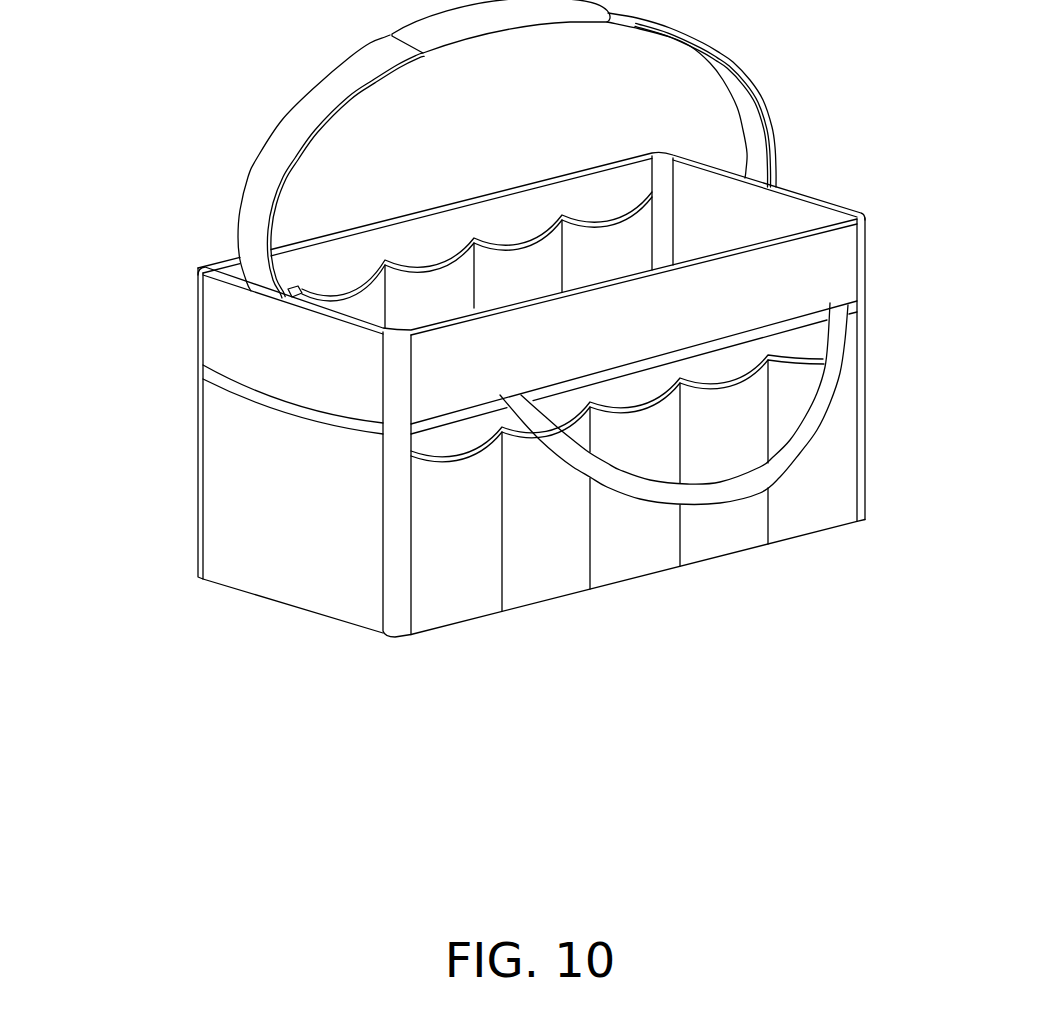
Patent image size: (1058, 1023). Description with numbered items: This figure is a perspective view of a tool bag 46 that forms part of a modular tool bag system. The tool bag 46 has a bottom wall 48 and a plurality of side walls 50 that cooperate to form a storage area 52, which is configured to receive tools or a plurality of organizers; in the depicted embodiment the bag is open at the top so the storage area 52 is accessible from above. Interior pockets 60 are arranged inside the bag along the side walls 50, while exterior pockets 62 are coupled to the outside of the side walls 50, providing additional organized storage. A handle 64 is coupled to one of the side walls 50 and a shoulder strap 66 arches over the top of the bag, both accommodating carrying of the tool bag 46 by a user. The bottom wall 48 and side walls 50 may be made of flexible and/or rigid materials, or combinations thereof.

The tool bag 46 is at (176, 200).
The bottom wall 48 is at (409, 655).
The side walls 50 is at (472, 372).
The storage area 52 is at (699, 193).
The interior pockets 60 is at (603, 243).
The exterior pockets 62 is at (815, 488).
The handles 64 is at (837, 342).
The shoulder straps 66 is at (777, 210).